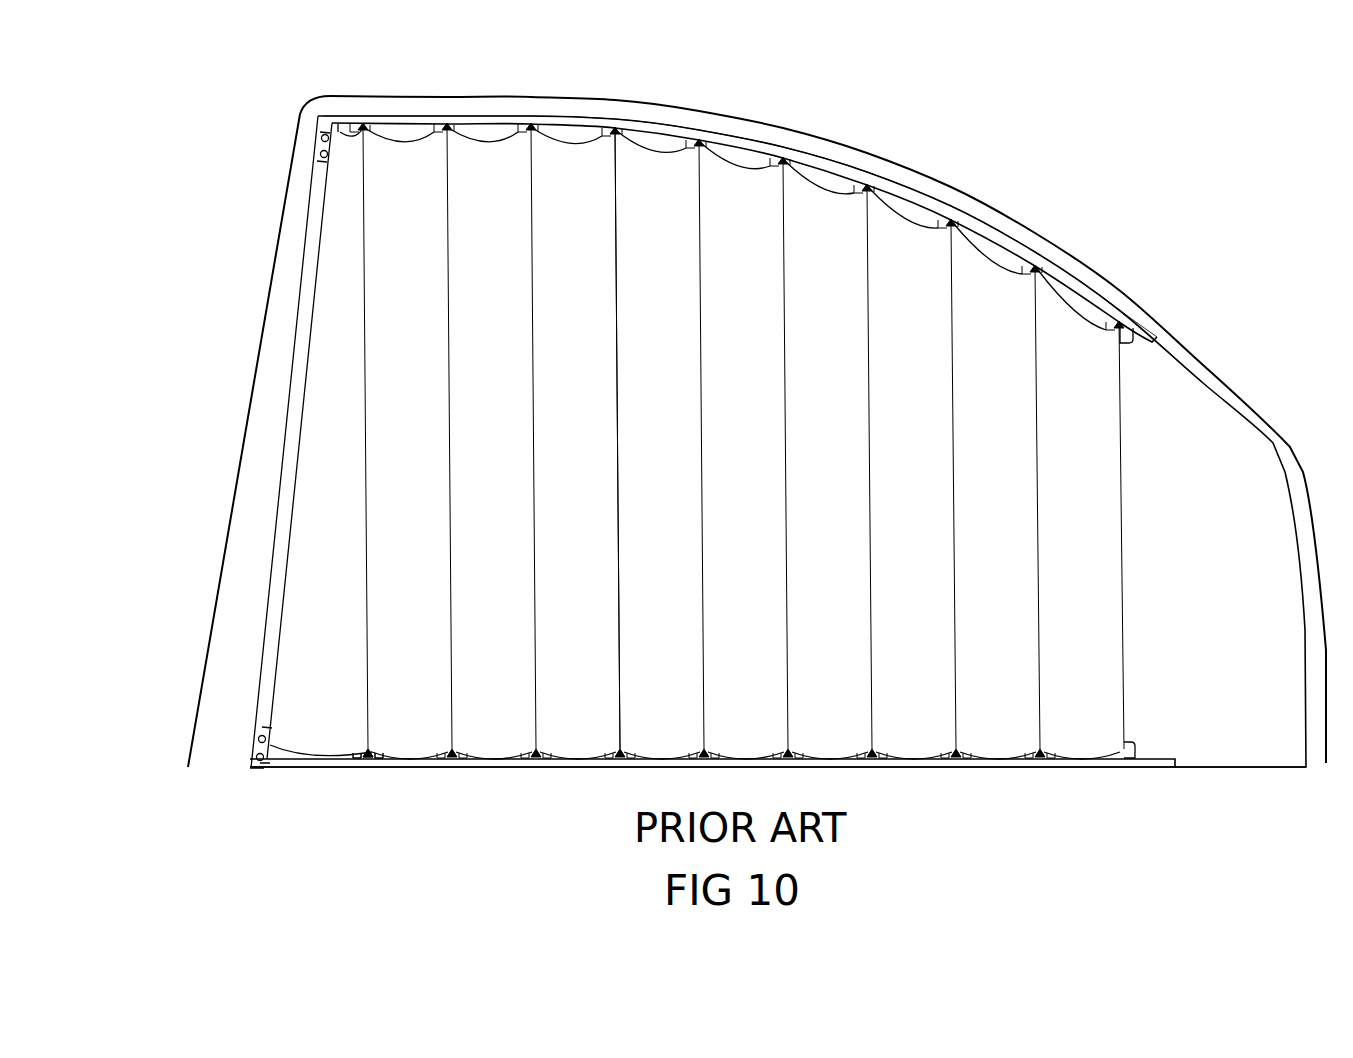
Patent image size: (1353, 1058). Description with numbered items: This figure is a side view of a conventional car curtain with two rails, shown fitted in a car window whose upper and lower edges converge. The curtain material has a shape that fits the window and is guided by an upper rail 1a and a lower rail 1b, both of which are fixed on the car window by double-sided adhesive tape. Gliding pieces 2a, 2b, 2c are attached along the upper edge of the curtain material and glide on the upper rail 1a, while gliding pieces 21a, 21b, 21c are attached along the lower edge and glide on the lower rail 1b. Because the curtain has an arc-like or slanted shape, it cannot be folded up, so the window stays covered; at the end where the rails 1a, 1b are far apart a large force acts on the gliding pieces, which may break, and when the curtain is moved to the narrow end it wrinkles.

The rail 1a is at (858, 178).
The rail 1b is at (890, 762).
The gliding piece 2a is at (452, 124).
The gliding piece 2b is at (540, 125).
The gliding piece 2c is at (628, 129).
The gliding piece 21a is at (367, 770).
The gliding piece 21b is at (456, 762).
The gliding piece 21c is at (540, 760).